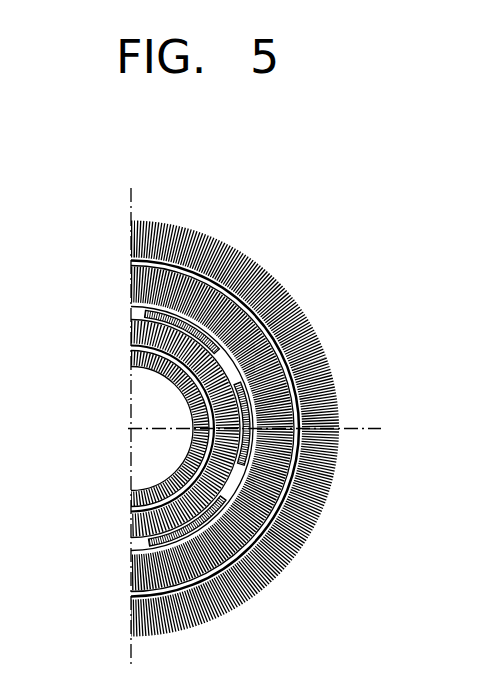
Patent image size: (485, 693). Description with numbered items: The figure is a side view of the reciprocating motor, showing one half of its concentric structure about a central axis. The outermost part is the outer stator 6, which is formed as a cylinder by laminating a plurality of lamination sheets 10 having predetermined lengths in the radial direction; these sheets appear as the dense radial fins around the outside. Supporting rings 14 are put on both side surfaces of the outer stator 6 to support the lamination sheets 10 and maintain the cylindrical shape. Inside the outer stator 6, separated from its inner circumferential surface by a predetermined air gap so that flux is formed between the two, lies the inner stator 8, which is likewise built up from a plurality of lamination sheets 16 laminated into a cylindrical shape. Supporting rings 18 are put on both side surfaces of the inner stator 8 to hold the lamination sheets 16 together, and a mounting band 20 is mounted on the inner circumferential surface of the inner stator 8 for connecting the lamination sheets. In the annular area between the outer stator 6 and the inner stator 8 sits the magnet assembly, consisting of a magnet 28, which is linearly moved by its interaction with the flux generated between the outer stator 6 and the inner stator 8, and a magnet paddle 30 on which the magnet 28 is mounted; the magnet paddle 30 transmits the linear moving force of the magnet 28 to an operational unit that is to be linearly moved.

The outer stator 6 is at (225, 412).
The inner stator 8 is at (240, 396).
The lamination sheets 10 is at (285, 547).
The supporting rings 14 is at (288, 333).
The lamination sheets 16 is at (125, 344).
The supporting rings 18 is at (123, 502).
The mounting band 20 is at (167, 469).
The magnet 28 is at (240, 257).
The magnet paddle 30 is at (267, 493).